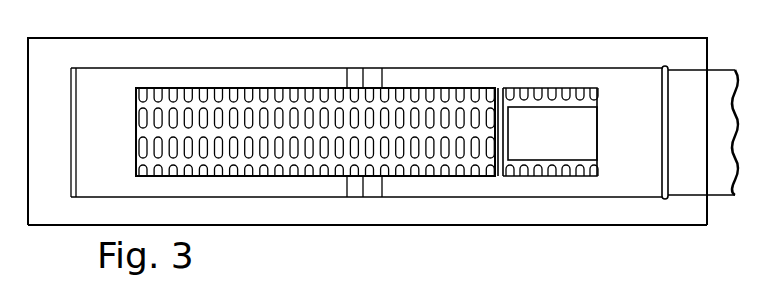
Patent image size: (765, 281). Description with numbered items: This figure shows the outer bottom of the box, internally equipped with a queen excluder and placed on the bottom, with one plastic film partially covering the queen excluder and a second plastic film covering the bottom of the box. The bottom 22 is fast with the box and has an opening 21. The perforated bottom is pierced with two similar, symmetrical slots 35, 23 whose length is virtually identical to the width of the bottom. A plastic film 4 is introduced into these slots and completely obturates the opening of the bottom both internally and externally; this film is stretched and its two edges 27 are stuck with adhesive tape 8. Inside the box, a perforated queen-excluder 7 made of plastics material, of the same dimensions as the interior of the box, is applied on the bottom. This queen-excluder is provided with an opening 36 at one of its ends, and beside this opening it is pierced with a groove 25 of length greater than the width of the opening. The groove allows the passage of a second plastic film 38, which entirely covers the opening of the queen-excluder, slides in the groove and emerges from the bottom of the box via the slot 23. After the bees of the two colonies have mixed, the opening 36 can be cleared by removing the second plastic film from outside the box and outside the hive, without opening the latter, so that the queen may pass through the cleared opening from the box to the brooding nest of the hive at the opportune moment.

The plastic film 4 is at (110, 181).
The perforated queen-excluder 7 is at (153, 130).
The adhesive tape 8 is at (372, 78).
The opening 21 is at (165, 178).
The bottom 22 is at (503, 213).
The slot 23 is at (665, 66).
The groove 25 is at (500, 177).
The edges 27 is at (364, 68).
The slot 35 is at (75, 72).
The opening 36 is at (580, 130).
The second plastic film 38 is at (557, 127).